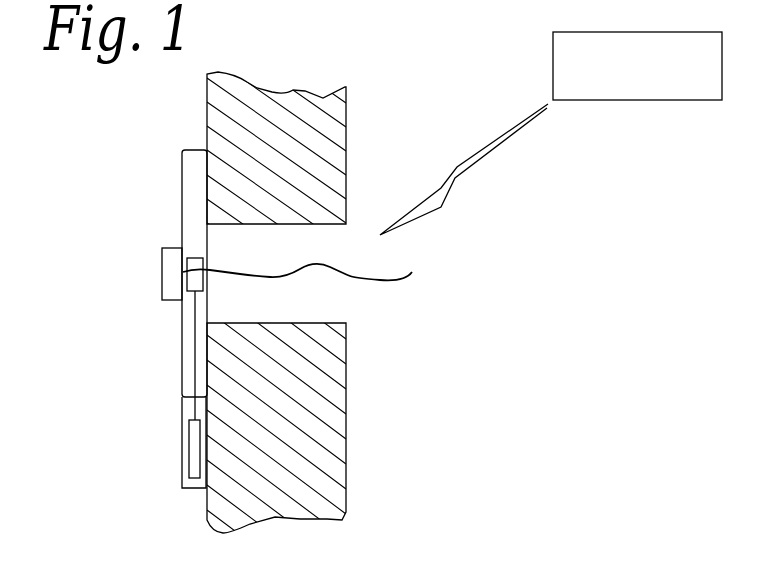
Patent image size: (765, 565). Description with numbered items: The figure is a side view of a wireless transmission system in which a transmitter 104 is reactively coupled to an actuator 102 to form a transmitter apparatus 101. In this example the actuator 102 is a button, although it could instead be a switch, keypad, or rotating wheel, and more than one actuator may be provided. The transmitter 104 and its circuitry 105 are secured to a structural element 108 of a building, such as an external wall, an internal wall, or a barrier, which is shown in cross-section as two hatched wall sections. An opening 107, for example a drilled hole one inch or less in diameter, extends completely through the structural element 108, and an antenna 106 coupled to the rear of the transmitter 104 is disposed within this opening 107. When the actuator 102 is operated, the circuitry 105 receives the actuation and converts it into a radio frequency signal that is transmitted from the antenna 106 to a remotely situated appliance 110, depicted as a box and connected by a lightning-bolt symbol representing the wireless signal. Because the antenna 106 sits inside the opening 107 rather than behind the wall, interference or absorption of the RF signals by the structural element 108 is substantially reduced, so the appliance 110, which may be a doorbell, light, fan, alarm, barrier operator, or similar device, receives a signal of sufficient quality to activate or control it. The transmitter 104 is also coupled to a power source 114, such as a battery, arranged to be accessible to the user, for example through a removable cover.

The transmitter apparatus 101 is at (249, 275).
The actuator 102 is at (165, 248).
The transmitter 104 is at (183, 149).
The circuitry 105 is at (203, 265).
The antenna 106 is at (352, 272).
The opening 107 is at (273, 323).
The structural element 108 is at (346, 113).
The appliance 110 is at (637, 100).
The power source 114 is at (195, 445).